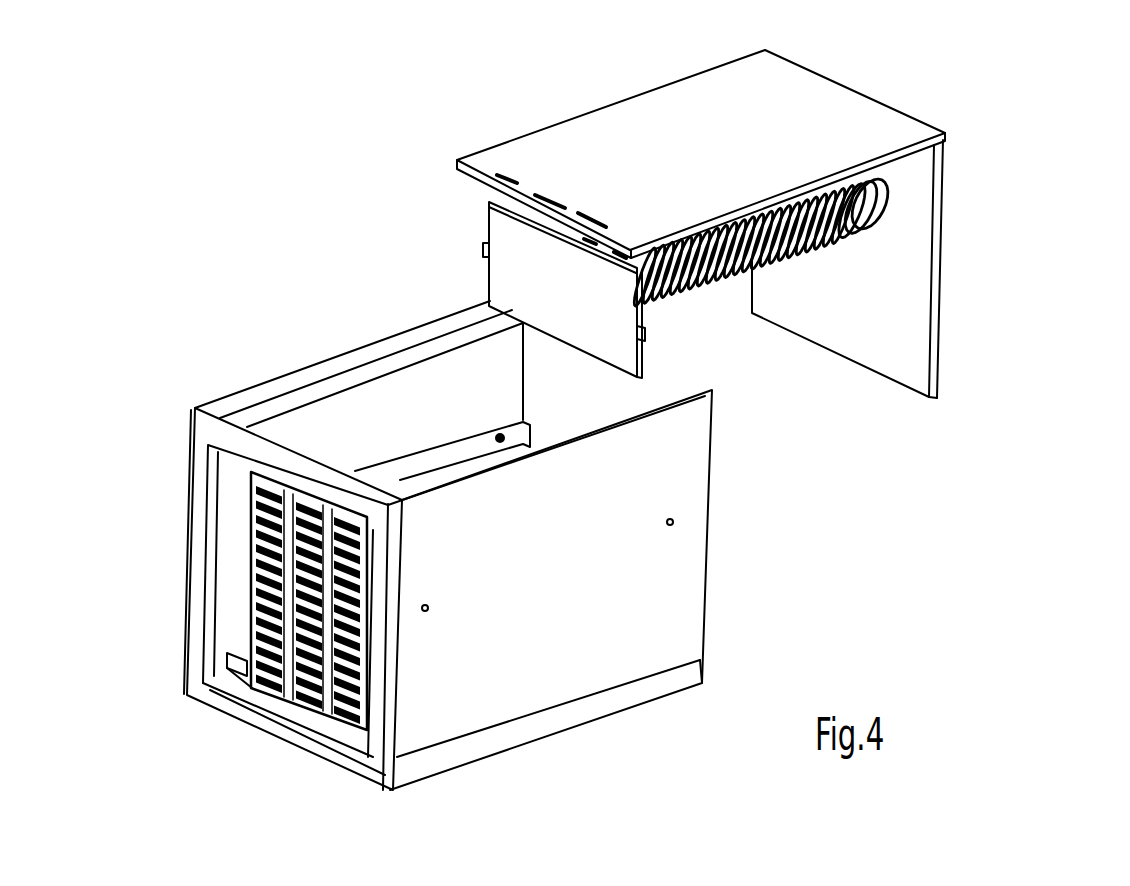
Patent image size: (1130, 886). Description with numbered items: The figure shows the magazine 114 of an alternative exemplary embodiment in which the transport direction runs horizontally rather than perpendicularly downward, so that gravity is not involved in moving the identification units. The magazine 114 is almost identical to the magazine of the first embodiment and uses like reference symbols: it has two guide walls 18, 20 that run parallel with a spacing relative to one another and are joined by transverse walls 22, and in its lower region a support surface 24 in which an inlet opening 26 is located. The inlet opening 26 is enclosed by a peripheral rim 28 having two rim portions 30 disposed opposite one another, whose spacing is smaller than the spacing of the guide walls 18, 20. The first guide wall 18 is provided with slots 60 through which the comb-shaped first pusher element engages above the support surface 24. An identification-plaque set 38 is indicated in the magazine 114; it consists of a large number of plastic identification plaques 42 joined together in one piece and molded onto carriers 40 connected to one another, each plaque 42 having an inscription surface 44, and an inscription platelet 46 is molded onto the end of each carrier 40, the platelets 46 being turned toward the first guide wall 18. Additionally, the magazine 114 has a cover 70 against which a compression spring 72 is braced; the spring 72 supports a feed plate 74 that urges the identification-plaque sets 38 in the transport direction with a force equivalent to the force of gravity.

The first guide wall 18 is at (621, 127).
The second guide wall 20 is at (447, 765).
The transverse wall 22 is at (383, 340).
The support surface 24 is at (325, 432).
The inlet opening 26 is at (222, 603).
The peripheral rim 28 is at (213, 592).
The rim portion 30 is at (220, 453).
The identification-plaque set 38 is at (272, 521).
The carrier 40 is at (335, 515).
The identification plaque 42 is at (277, 524).
The inscription surface 44 is at (373, 602).
The inscription platelet 46 is at (340, 720).
The slot 60 is at (584, 214).
The cover 70 is at (944, 238).
The compression spring 72 is at (773, 268).
The feed plate 74 is at (513, 278).
The magazine 114 is at (946, 591).